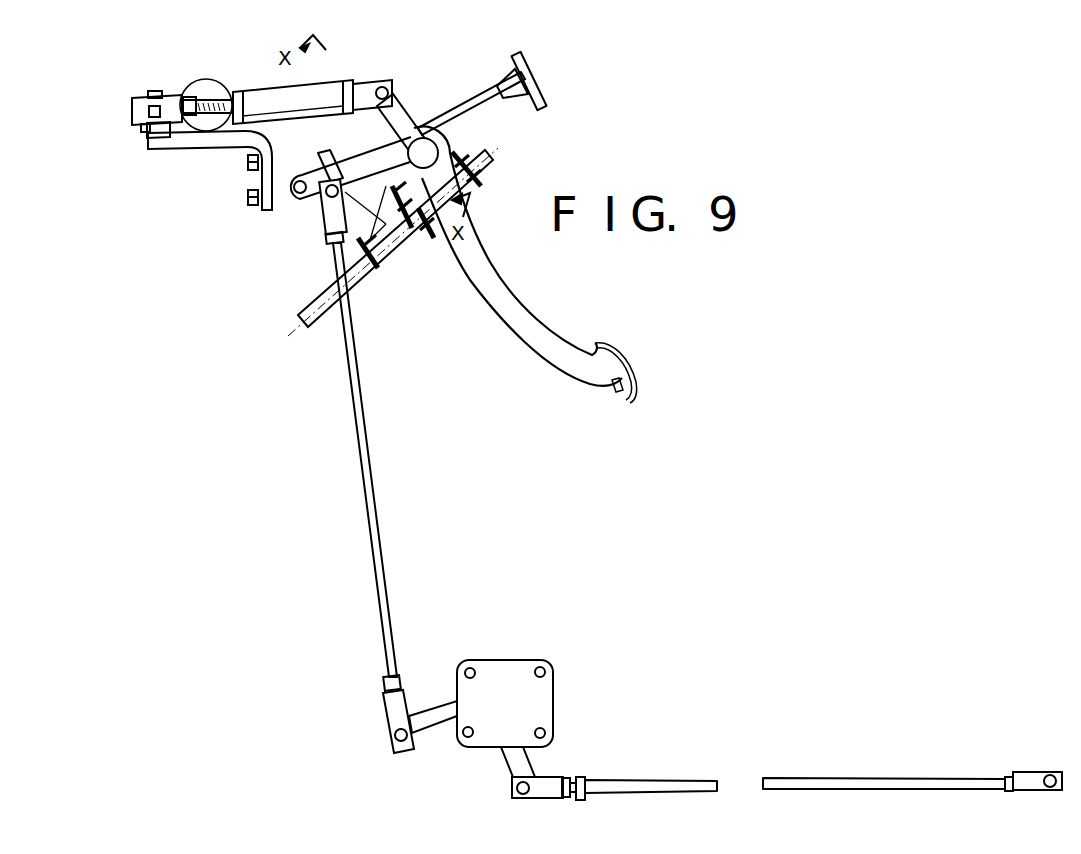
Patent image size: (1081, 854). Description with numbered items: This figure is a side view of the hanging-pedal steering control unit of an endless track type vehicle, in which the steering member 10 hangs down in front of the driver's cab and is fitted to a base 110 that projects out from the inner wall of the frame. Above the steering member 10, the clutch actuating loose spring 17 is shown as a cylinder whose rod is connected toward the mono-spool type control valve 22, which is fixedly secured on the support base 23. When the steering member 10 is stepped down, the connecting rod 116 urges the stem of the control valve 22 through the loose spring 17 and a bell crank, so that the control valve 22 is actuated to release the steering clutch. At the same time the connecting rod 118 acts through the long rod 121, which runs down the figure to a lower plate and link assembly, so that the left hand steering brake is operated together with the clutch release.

The steering member 10 is at (518, 314).
The loose spring 17 is at (331, 90).
The control valve 22 is at (216, 92).
The support base 23 is at (198, 142).
The base 110 is at (318, 314).
The connecting rod 116 is at (405, 118).
The connecting rod 118 is at (369, 177).
The rod 121 is at (365, 461).